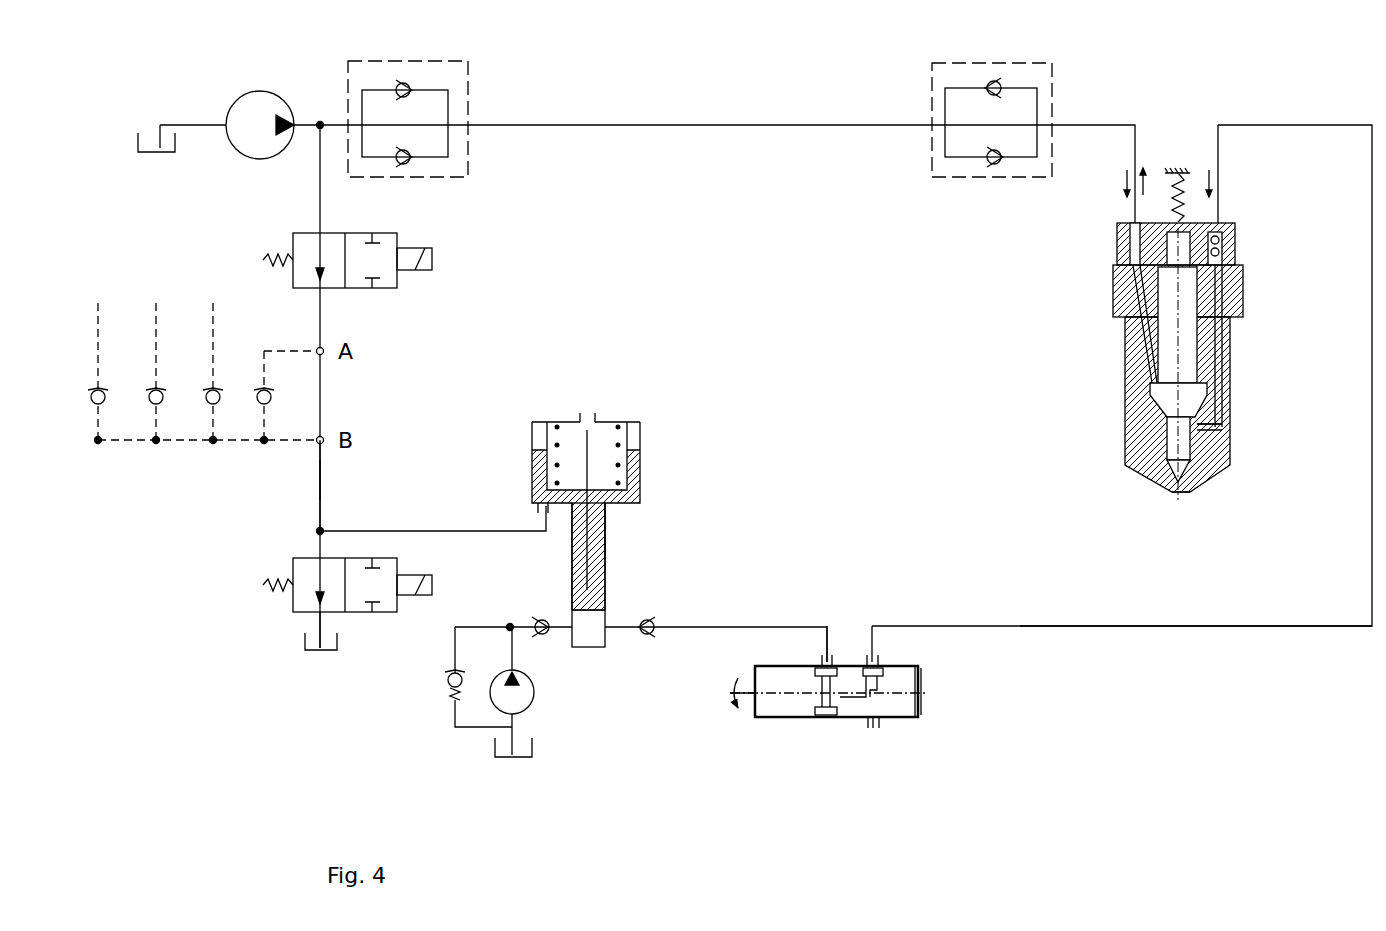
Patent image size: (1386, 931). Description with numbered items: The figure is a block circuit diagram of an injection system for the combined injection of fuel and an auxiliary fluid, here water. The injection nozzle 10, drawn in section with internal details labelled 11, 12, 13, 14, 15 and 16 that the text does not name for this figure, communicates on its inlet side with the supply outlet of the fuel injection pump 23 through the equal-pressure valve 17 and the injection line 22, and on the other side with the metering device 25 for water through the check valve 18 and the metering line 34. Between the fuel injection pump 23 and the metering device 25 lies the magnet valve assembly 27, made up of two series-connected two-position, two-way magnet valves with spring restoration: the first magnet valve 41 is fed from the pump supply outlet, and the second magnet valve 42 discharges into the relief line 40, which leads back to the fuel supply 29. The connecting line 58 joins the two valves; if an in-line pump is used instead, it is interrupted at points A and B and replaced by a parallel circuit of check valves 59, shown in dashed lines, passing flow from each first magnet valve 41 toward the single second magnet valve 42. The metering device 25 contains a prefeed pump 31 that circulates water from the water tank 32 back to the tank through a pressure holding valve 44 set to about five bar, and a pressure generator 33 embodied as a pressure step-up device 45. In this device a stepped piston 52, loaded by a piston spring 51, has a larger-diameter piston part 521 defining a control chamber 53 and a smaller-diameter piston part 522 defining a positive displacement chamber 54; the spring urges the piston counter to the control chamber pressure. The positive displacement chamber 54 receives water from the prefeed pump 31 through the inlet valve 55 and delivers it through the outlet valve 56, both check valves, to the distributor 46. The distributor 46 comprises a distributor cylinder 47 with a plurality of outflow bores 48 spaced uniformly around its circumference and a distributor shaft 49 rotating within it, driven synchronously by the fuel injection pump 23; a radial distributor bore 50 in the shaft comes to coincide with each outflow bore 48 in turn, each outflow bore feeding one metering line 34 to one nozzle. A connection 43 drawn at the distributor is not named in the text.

The injection nozzle 10 is at (1165, 349).
The nozzle needle 11 is at (1228, 395).
The nozzle tip 12 is at (1183, 492).
The transverse passage 13 is at (1195, 440).
The nozzle body 14 is at (1135, 445).
The fuel inlet 15 is at (1125, 222).
The nozzle holder 16 is at (1240, 272).
The equal-pressure valve 17 is at (962, 180).
The check valve 18 is at (1225, 235).
The injection line 22 is at (655, 120).
The fuel injection pump 23 is at (260, 100).
The metering device 25 is at (795, 520).
The magnet valve assembly 27 is at (270, 505).
The fuel supply 29 is at (165, 152).
The prefeed pump 31 is at (520, 700).
The water tank 32 is at (510, 760).
The pressure generator 33 is at (633, 508).
The metering line 34 is at (1182, 628).
The relief line 40 is at (335, 620).
The first magnet valve 41 is at (385, 288).
The second magnet valve 42 is at (300, 600).
The inlet port 43 is at (875, 660).
The pressure holding valve 44 is at (452, 705).
The pressure step-up device 45 is at (622, 515).
The distributor 46 is at (862, 726).
The distributor cylinder 47 is at (920, 717).
The outflow bores 48 is at (874, 730).
The distributor shaft 49 is at (757, 712).
The distributor bore 50 is at (880, 677).
The piston spring 51 is at (618, 425).
The stepped piston 52 is at (586, 440).
The control chamber 53 is at (535, 510).
The positive displacement chamber 54 is at (585, 640).
The inlet valve 55 is at (540, 620).
The outlet valve 56 is at (650, 640).
The connecting line 58 is at (320, 481).
The check valves 59 is at (100, 393).
The larger-diameter piston part 521 is at (640, 480).
The smaller-diameter piston part 522 is at (590, 582).